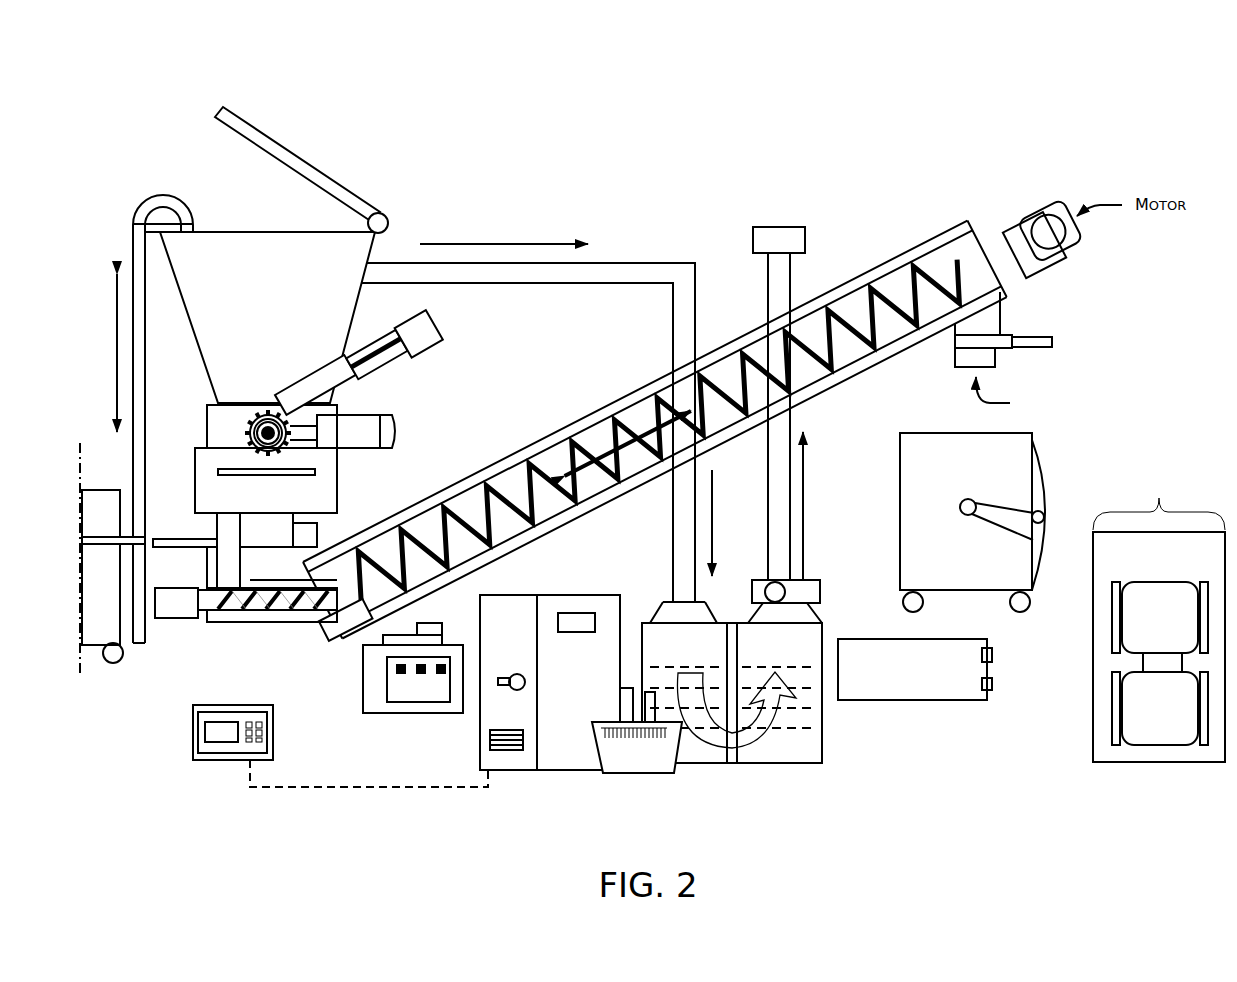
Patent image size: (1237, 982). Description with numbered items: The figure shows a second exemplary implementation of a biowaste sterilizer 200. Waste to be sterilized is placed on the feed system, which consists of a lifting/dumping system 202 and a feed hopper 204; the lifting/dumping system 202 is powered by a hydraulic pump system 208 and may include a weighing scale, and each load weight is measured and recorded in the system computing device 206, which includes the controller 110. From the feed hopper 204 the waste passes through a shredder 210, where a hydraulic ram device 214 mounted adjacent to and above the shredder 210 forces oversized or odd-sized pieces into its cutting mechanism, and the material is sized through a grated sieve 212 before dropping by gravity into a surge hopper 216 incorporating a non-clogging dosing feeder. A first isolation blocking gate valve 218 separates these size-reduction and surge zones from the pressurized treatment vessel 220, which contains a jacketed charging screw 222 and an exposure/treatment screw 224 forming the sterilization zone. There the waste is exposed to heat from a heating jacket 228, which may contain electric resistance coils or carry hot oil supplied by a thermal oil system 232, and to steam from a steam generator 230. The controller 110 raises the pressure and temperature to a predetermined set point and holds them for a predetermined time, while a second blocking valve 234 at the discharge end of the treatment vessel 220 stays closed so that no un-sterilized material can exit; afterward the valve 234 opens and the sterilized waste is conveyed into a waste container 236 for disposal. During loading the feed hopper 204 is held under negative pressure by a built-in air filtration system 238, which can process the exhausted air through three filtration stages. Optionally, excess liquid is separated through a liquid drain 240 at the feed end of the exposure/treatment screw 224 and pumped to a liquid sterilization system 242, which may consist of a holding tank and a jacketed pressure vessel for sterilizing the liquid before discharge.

The biowaste sterilizer 200 is at (518, 60).
The lifting/dumping system 202 is at (108, 306).
The feed hopper 204 is at (287, 328).
The system computing device 206 is at (596, 688).
The hydraulic pump system 208 is at (656, 766).
The shredder 210 is at (206, 423).
The grated sieve 212 is at (316, 479).
The hydraulic ram device 214 is at (417, 359).
The surge hopper 216 is at (287, 506).
The first isolation blocking gate valve 218 is at (212, 537).
The treatment vessel 220 is at (522, 488).
The jacketed charging screw 222 is at (298, 604).
The exposure/treatment screw 224 is at (655, 414).
The heating jacket 228 is at (589, 411).
The steam generator 230 is at (437, 694).
The thermal oil system 232 is at (931, 679).
The second blocking valve 234 is at (1010, 329).
The waste container 236 is at (987, 558).
The air filtration system 238 is at (612, 276).
The liquid drain 240 is at (324, 636).
The liquid sterilization system 242 is at (1211, 568).
The controller 110 is at (571, 610).